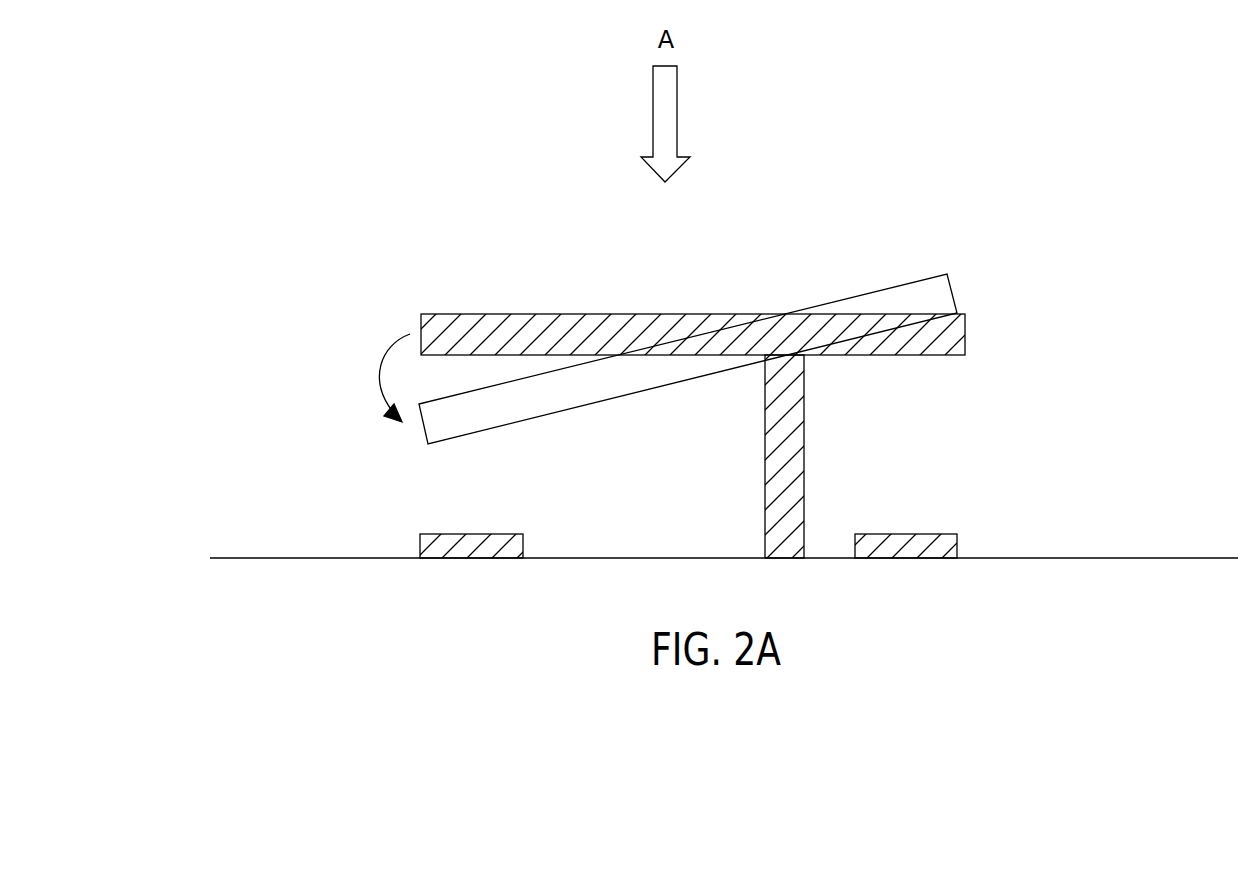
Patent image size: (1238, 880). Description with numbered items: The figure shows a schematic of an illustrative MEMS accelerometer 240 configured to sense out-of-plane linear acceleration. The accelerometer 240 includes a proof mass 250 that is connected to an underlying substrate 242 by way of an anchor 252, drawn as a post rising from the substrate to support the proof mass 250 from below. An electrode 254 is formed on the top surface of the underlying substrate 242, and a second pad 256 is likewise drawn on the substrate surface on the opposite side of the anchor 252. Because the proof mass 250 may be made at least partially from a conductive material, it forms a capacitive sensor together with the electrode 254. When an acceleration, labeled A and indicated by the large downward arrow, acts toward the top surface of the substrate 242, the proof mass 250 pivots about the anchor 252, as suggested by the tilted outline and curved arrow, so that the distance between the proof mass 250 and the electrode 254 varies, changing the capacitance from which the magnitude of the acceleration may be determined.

The accelerometer 240 is at (250, 190).
The underlying substrate 242 is at (261, 574).
The proof mass 250 is at (488, 313).
The anchor 252 is at (765, 482).
The electrode 254 is at (435, 532).
The right stop pad 256 is at (910, 532).